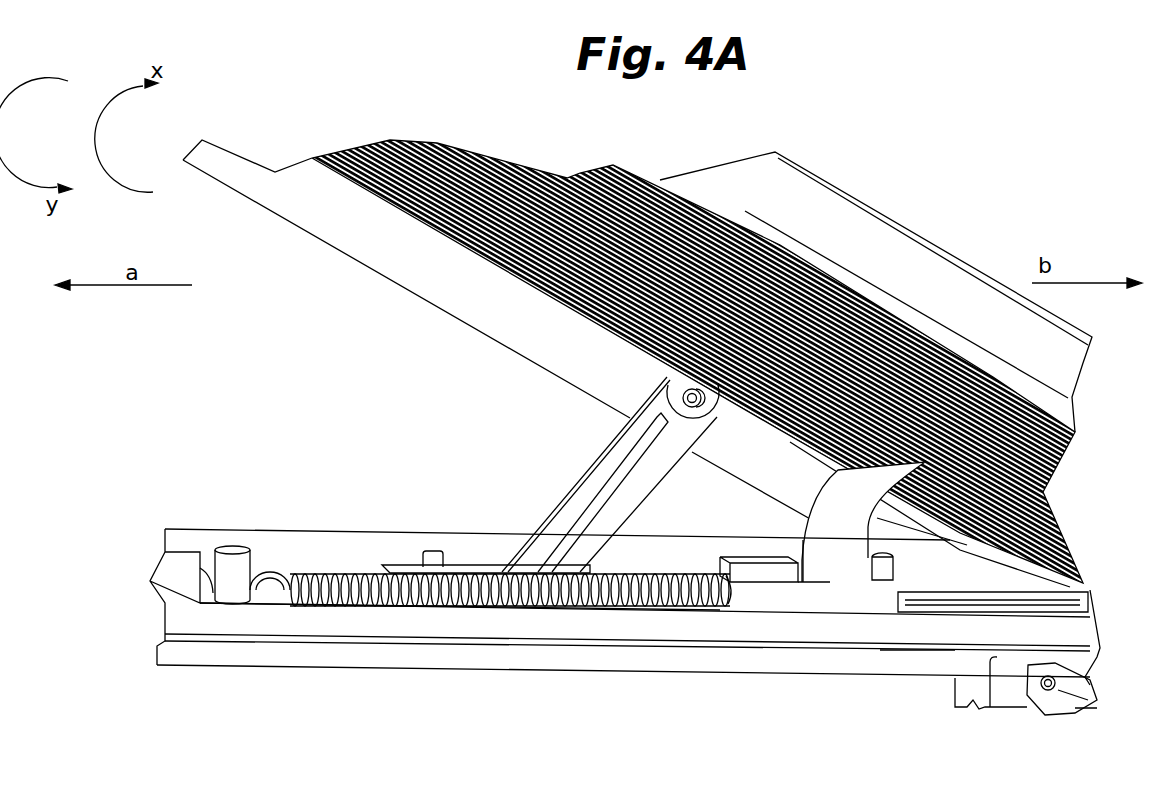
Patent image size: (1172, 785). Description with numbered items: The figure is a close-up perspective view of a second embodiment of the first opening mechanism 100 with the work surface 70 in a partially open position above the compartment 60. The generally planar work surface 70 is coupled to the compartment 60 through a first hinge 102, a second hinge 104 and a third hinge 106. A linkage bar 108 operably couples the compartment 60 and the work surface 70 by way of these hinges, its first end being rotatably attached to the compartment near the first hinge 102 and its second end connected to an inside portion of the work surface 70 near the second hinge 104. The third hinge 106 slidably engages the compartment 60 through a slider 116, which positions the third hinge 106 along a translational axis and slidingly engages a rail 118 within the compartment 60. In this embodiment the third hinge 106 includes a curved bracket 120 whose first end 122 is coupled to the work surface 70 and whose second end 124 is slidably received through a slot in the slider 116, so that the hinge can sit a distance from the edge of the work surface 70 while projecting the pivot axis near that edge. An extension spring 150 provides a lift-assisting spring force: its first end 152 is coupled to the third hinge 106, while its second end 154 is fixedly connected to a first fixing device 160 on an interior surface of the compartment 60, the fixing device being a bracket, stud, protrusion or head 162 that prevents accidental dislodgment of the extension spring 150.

The work surface 70 is at (637, 359).
The first end of the bracket 122 is at (920, 330).
The second hinge 104 is at (683, 397).
The linkage bar 108 is at (613, 456).
The first opening mechanism 100 is at (457, 581).
The first hinge 102 is at (470, 557).
The head 162 is at (235, 545).
The extension spring 150 is at (360, 575).
The first fixing device 160 is at (227, 592).
The second end of the extension spring 154 is at (317, 608).
The first end of the extension spring 152 is at (643, 608).
The slider 116 is at (743, 598).
The third hinge 106 is at (654, 639).
The second end of the bracket 124 is at (803, 582).
The bracket 120 is at (847, 563).
The compartment 60 is at (918, 660).
The rail 118 is at (1097, 707).